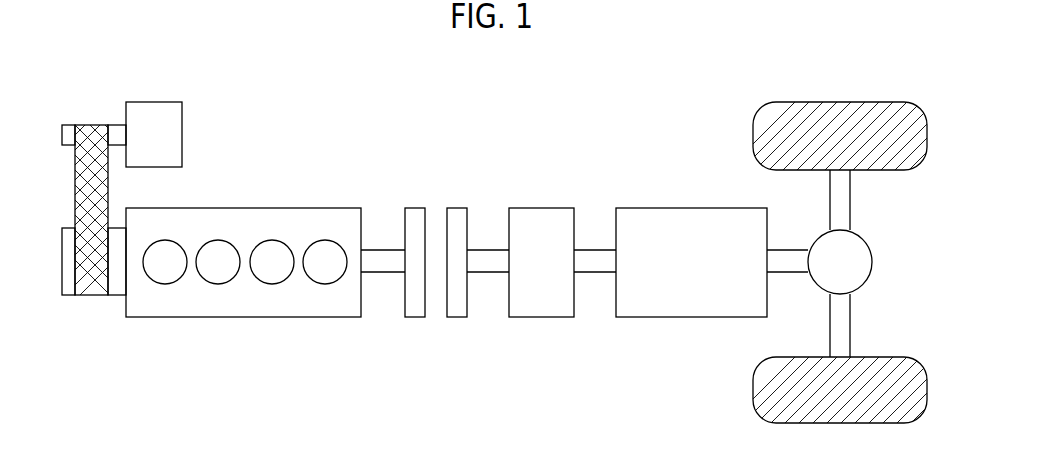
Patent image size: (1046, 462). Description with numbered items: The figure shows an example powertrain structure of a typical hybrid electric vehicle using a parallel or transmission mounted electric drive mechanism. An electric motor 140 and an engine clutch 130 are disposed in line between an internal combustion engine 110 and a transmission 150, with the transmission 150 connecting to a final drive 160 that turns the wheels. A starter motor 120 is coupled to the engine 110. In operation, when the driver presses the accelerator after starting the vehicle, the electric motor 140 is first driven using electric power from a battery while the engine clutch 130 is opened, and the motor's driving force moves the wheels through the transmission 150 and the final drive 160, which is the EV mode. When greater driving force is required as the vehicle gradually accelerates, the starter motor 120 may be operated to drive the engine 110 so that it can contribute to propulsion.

The internal combustion engine 110 is at (317, 208).
The starter motor 120 is at (183, 117).
The engine clutch 130 is at (460, 207).
The electric motor 140 is at (548, 207).
The transmission 150 is at (725, 207).
The final drive 160 is at (872, 245).